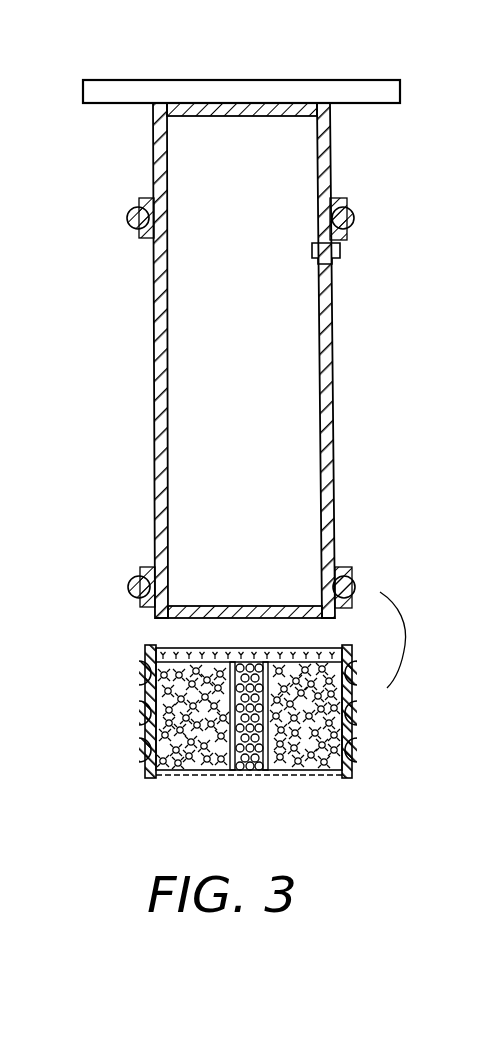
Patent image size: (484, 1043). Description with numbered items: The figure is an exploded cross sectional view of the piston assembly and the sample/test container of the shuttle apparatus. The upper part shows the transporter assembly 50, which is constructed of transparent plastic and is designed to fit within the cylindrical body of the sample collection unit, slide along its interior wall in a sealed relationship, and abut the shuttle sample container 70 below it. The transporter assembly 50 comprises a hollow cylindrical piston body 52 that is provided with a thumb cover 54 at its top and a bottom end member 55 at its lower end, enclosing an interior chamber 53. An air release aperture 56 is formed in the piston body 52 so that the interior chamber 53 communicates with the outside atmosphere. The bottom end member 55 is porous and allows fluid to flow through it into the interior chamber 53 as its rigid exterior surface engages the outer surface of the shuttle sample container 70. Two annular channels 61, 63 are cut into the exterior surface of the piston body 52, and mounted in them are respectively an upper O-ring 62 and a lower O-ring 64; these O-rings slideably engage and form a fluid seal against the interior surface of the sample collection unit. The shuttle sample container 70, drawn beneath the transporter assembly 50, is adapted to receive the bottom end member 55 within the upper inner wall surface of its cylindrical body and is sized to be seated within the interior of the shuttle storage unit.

The transporter assembly 50 is at (231, 395).
The piston body 52 is at (155, 465).
The interior chamber 53 is at (252, 337).
The thumb cover 54 is at (265, 78).
The bottom end member 55 is at (170, 617).
The air release aperture 56 is at (340, 250).
The upper annular channel 61 is at (319, 208).
The upper O-ring 62 is at (354, 206).
The lower annular channel 63 is at (323, 576).
The lower O-ring 64 is at (355, 583).
The shuttle sample container 70 is at (132, 766).